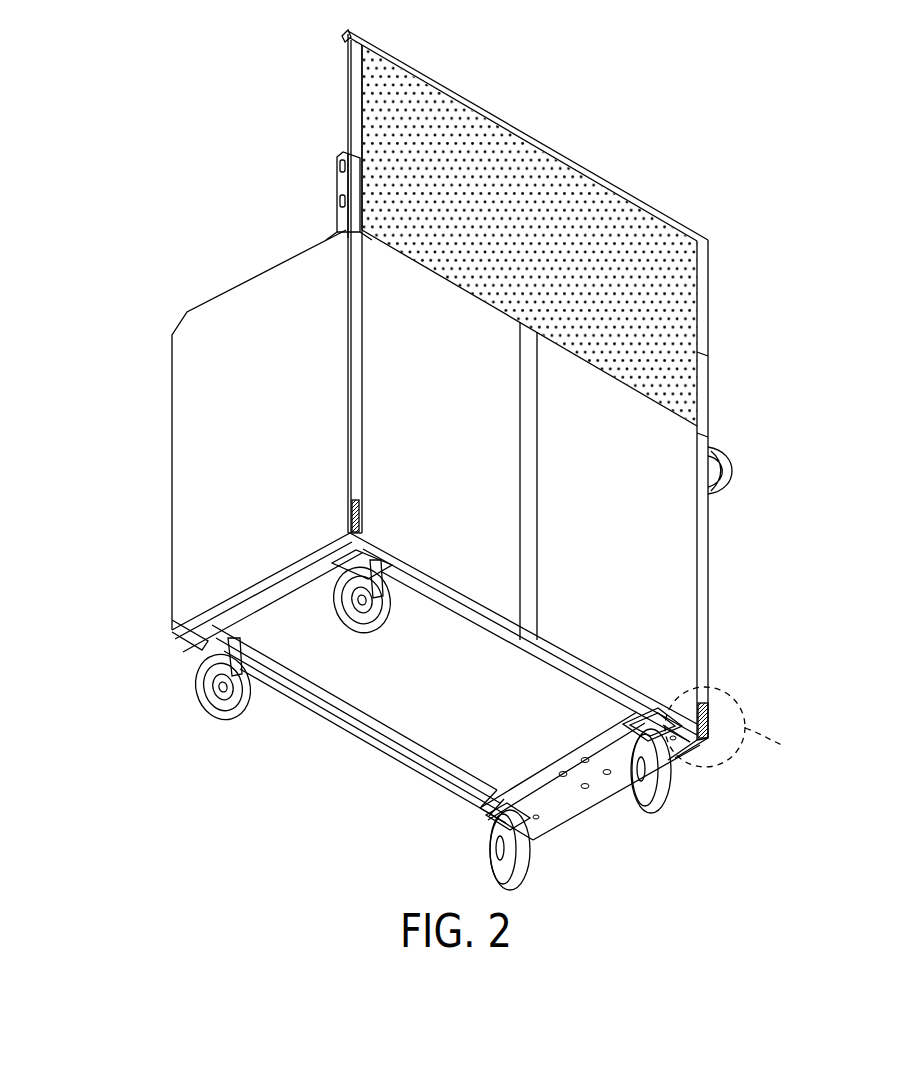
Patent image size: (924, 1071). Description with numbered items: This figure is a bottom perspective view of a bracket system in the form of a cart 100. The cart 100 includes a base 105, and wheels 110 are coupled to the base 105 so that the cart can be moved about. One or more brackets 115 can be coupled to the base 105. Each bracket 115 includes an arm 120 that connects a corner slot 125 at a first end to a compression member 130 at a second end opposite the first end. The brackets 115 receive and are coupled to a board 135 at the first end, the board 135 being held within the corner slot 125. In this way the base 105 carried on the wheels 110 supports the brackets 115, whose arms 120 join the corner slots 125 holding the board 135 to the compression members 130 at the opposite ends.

The cart 100 is at (820, 261).
The base 105 is at (183, 463).
The wheels 110 is at (212, 682).
The brackets 115 is at (703, 400).
The arm 120 is at (703, 545).
The corner slot 125 is at (340, 184).
The compression member 130 is at (693, 753).
The board 135 is at (360, 103).